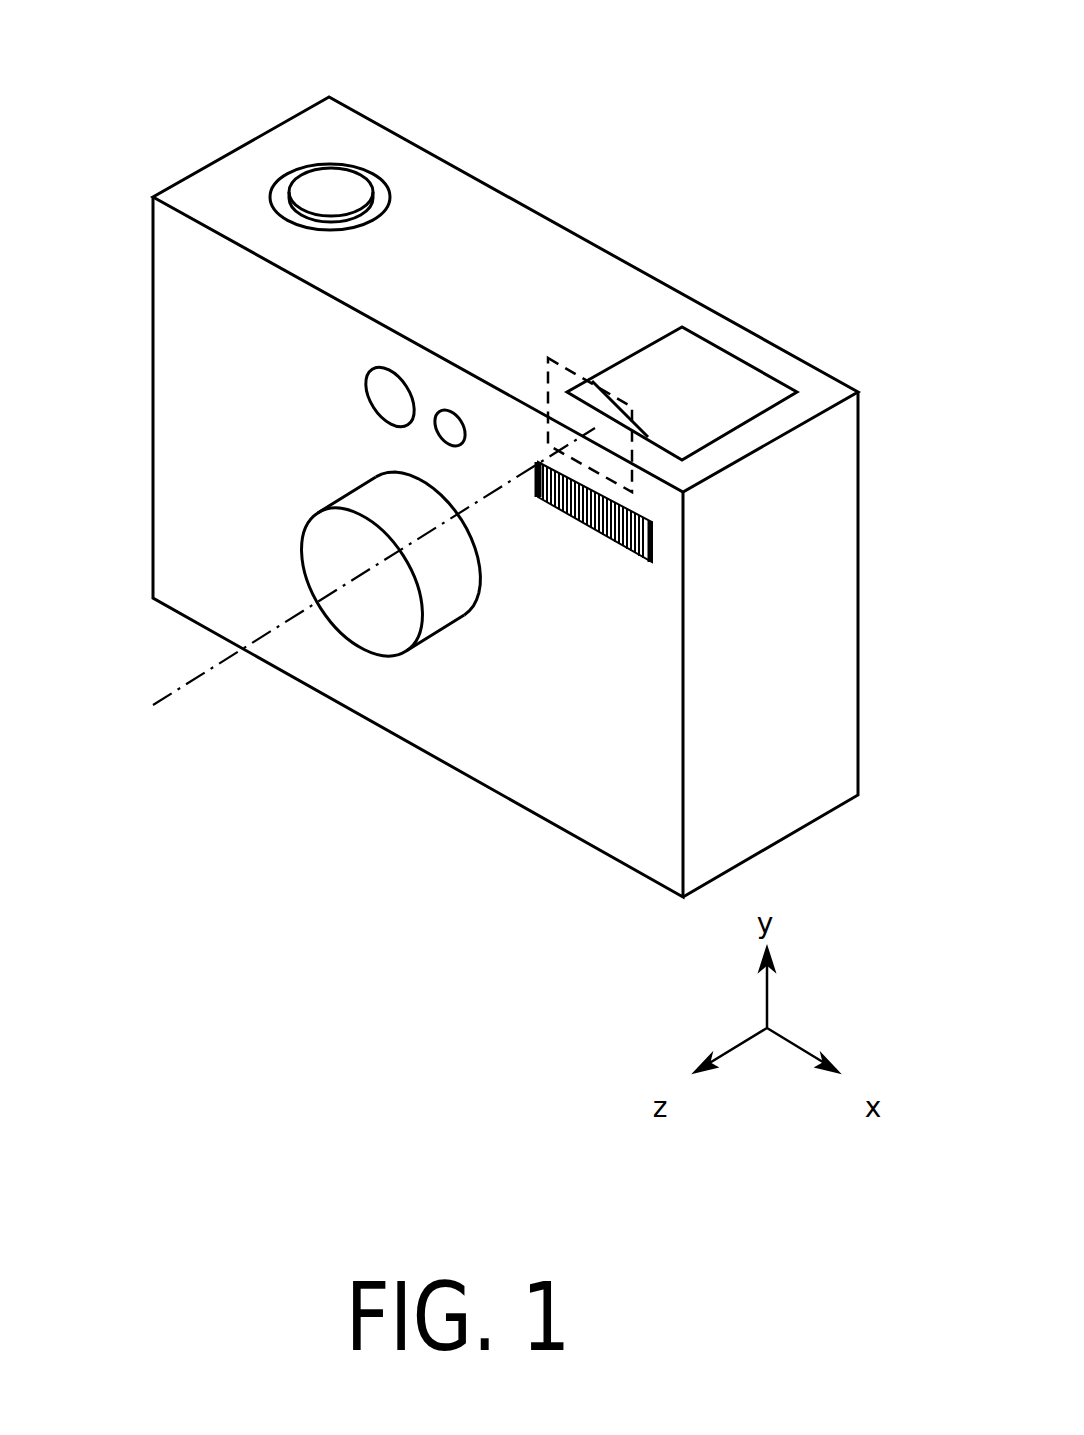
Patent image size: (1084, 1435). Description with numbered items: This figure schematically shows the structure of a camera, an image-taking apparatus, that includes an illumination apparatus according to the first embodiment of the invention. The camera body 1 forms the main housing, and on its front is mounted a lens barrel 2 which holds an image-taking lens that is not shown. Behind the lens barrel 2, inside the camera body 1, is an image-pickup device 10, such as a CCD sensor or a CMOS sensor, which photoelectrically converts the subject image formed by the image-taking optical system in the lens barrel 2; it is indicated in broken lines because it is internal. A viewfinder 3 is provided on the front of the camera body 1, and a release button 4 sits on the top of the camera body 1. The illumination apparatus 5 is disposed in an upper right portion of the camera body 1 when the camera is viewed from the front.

The camera body 1 is at (503, 747).
The lens barrel 2 is at (353, 610).
The viewfinder 3 is at (448, 418).
The release button 4 is at (333, 195).
The illumination apparatus 5 is at (650, 437).
The image-pickup device 10 is at (567, 372).